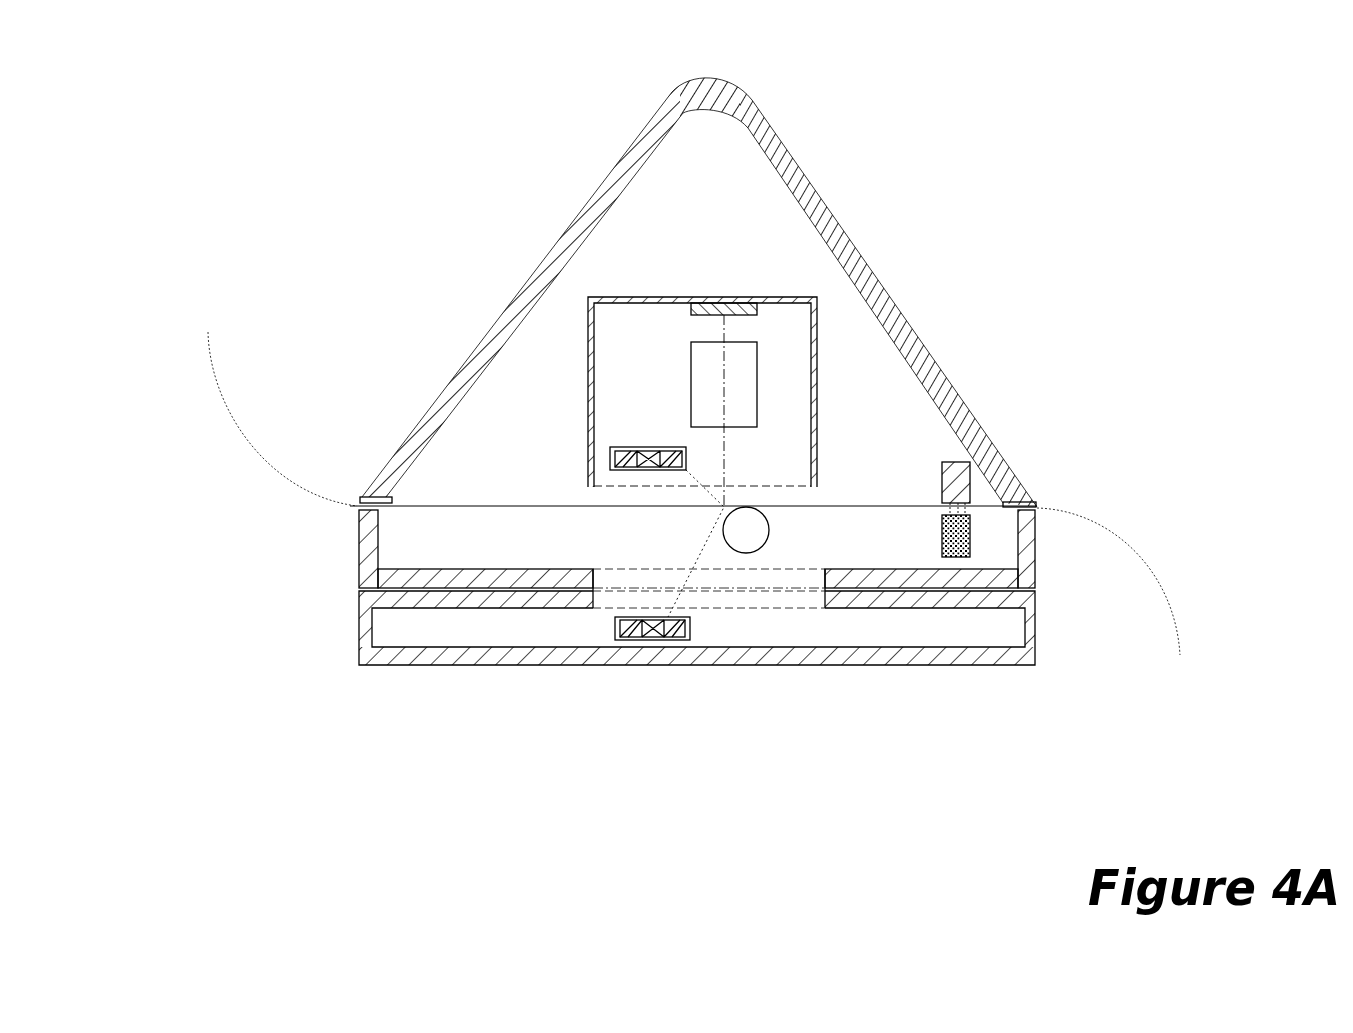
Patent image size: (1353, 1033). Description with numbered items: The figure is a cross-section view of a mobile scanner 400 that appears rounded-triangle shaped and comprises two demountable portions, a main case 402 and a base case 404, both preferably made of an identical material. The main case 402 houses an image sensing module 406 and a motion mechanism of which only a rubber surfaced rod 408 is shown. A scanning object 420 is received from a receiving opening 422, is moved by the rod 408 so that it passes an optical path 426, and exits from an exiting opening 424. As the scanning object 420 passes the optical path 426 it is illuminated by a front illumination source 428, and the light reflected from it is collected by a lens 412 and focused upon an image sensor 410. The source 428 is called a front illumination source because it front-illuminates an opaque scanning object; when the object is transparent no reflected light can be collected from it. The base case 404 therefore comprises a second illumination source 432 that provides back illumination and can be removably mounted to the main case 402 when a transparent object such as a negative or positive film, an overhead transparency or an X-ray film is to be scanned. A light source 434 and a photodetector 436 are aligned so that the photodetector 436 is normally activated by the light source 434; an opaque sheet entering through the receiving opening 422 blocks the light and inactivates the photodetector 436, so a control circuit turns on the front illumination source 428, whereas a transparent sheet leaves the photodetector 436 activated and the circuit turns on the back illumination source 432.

The mobile scanner 400 is at (920, 96).
The main case 402 is at (753, 102).
The base case 404 is at (360, 624).
The image sensing module 406 is at (813, 452).
The rubber surfaced rod 408 is at (770, 528).
The image sensor 410 is at (705, 315).
The lens 412 is at (757, 398).
The scanning object 420 is at (210, 353).
The receiving opening 422 is at (1037, 507).
The exiting opening 424 is at (357, 508).
The optical path 426 is at (725, 475).
The front illumination source 428 is at (612, 455).
The second illumination source 432 is at (665, 617).
The light source 434 is at (985, 442).
The photodetector 436 is at (972, 535).